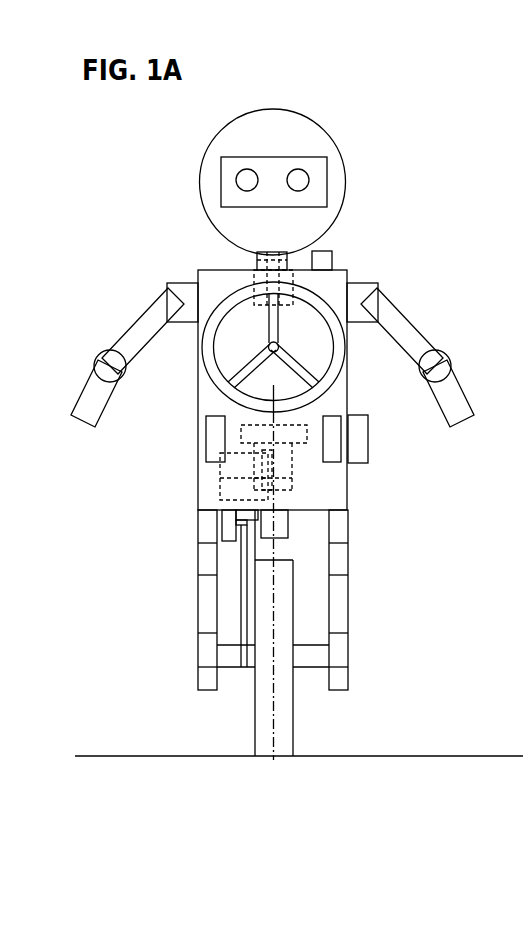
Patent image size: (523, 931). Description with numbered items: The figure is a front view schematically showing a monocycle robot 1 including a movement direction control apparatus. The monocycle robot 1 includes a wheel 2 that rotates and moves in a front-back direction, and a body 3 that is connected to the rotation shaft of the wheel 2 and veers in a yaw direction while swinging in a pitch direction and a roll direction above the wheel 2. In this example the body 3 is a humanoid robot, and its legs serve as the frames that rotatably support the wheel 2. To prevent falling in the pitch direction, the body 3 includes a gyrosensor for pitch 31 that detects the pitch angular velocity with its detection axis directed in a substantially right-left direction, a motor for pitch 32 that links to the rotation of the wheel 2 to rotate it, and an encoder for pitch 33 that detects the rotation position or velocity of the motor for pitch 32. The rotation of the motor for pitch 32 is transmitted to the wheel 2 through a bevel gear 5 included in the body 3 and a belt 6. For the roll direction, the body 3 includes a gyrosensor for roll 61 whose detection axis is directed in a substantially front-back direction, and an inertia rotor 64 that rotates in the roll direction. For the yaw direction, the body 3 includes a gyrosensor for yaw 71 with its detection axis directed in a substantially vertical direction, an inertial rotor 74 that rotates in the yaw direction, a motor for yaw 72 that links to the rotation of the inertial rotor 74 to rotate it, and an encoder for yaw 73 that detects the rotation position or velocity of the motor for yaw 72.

The monocycle robot 1 is at (520, 84).
The wheel 2 is at (285, 731).
The body 3 is at (373, 262).
The bevel gear 5 is at (228, 533).
The belt 6 is at (245, 635).
The gyrosensor for pitch 31 is at (360, 433).
The motor for pitch 32 is at (220, 490).
The encoder for pitch 33 is at (205, 465).
The gyrosensor for roll 61 is at (332, 455).
The inertia rotor 64 is at (343, 318).
The gyrosensor for yaw 71 is at (215, 448).
The motor for yaw 72 is at (293, 470).
The encoder for yaw 73 is at (293, 492).
The inertial rotor 74 is at (241, 432).